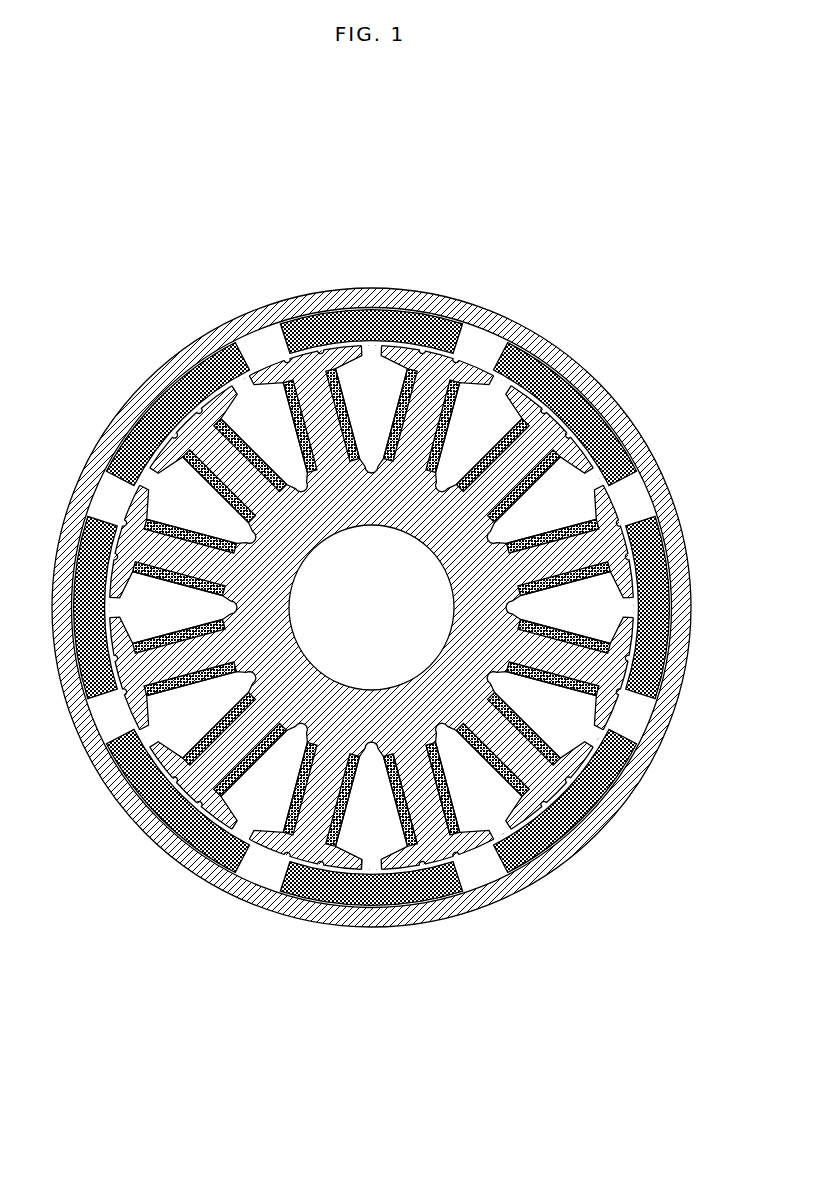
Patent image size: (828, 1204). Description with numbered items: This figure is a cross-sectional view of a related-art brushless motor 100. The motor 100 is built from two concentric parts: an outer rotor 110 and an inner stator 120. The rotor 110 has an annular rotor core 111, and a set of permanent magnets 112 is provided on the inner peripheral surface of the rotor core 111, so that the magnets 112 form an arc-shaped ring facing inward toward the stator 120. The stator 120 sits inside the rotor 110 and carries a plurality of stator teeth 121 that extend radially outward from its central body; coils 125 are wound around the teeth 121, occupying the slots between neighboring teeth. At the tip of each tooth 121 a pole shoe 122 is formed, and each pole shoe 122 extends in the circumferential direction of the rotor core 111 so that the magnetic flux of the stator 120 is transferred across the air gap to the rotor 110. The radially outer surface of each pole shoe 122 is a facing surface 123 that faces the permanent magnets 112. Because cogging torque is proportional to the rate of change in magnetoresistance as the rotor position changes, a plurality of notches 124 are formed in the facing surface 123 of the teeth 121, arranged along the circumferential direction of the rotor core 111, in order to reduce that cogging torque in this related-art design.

The brushless motor 100 is at (600, 274).
The rotor 110 is at (415, 172).
The rotor core 111 is at (361, 289).
The permanent magnet 112 is at (355, 312).
The stator 120 is at (540, 997).
The stator teeth 121 is at (427, 790).
The pole shoe 122 is at (437, 852).
The facing surface 123 is at (340, 868).
The notch 124 is at (286, 855).
The coil 125 is at (290, 786).